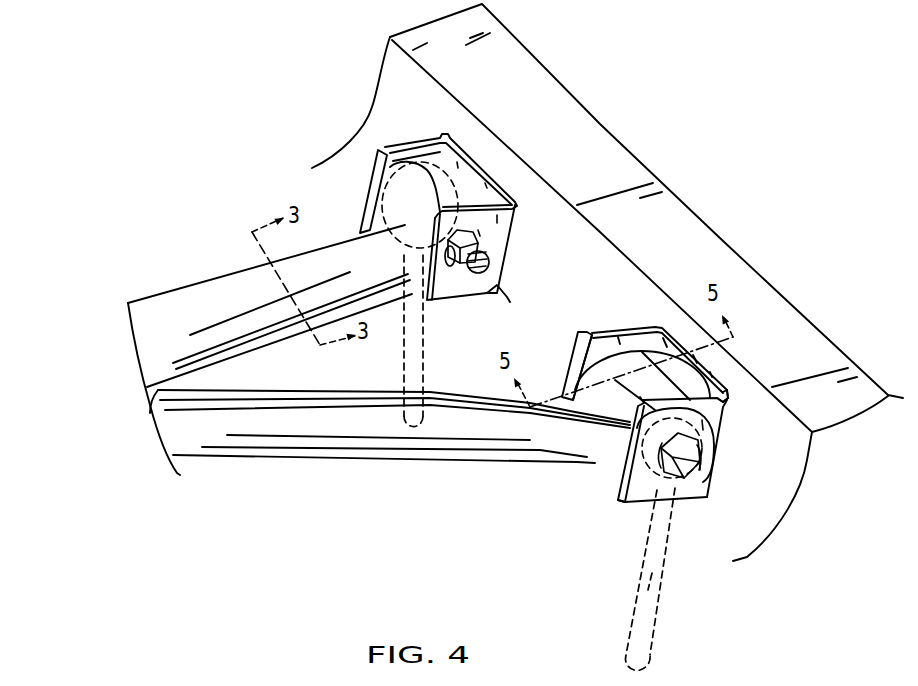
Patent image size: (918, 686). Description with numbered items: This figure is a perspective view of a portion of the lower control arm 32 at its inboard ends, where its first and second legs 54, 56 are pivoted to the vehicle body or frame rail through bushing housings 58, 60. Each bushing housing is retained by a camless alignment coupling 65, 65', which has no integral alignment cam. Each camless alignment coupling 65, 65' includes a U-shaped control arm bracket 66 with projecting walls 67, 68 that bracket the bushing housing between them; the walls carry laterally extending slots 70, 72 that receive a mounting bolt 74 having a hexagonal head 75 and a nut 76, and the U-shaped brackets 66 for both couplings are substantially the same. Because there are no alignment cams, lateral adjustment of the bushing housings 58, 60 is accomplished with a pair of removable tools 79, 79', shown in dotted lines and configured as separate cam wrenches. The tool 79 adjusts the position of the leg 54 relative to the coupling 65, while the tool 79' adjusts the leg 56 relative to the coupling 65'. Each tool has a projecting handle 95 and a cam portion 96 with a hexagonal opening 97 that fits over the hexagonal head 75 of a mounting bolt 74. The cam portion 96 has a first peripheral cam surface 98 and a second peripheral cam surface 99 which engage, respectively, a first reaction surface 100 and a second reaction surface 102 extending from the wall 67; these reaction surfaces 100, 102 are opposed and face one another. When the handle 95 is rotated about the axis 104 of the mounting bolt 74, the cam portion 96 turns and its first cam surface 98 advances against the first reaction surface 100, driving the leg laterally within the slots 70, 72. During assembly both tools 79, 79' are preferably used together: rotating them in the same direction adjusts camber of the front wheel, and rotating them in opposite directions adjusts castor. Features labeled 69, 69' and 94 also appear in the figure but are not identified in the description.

The lower control arm 32 is at (346, 254).
The first leg 54 is at (455, 456).
The second leg 56 is at (208, 286).
The bushing housing 58 is at (607, 363).
The bushing housing 60 is at (415, 161).
The camless alignment coupling 65 is at (668, 354).
The camless alignment coupling 65' is at (478, 165).
The U-shaped control arm bracket 66 is at (518, 186).
The projecting wall 67 is at (397, 170).
The projecting wall 68 is at (441, 282).
The wall 69 is at (706, 344).
The wall 69' is at (504, 202).
The laterally extending slot 70 is at (701, 463).
The laterally extending slot 72 is at (492, 259).
The mounting bolt 74 is at (700, 468).
The head 75 is at (668, 450).
The nut 76 is at (488, 243).
The removable tool 79 is at (666, 579).
The removable tool 79' is at (386, 341).
The top wall 94 is at (691, 396).
The projecting handle 95 is at (652, 573).
The cam portion 96 is at (363, 200).
The hexagonal opening 97 is at (666, 468).
The first peripheral cam surface 98 is at (650, 429).
The second peripheral cam surface 99 is at (705, 497).
The first reaction surface 100 is at (373, 170).
The second reaction surface 102 is at (723, 410).
The axis 104 is at (485, 280).